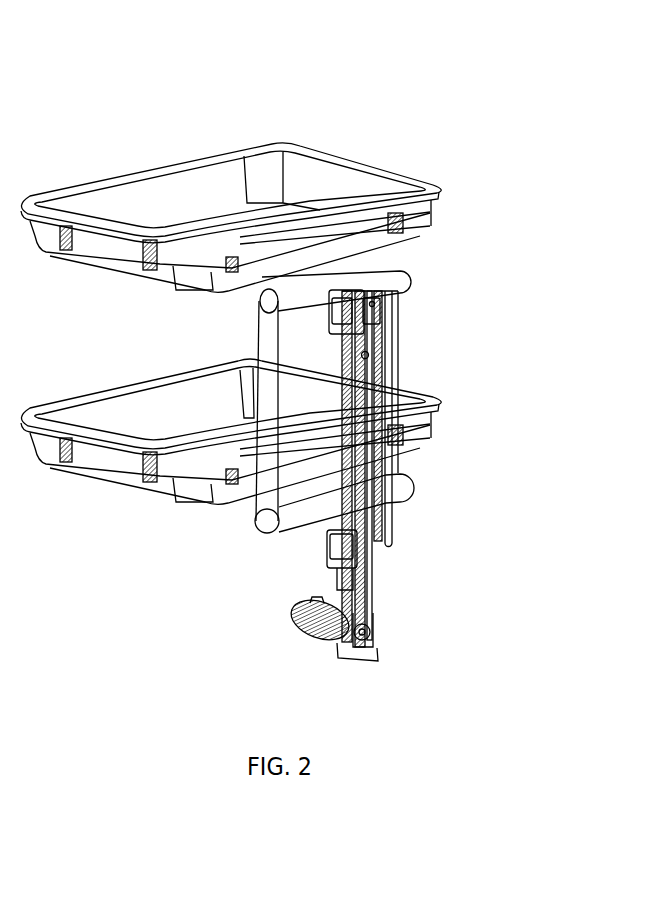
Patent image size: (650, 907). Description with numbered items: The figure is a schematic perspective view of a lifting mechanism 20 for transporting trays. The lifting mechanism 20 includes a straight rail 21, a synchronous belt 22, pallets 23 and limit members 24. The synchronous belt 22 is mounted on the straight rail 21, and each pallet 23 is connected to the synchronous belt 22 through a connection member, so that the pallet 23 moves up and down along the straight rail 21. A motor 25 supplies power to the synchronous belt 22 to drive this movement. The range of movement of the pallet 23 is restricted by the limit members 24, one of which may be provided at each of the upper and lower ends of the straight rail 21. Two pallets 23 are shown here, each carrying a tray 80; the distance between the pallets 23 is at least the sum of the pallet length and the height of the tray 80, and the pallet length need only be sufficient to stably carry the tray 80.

The lifting mechanism 20 is at (273, 346).
The tray 80 is at (333, 181).
The pallet 23 is at (392, 277).
The limit member 24 is at (330, 334).
The straight rail 21 is at (377, 537).
The synchronous belt 22 is at (352, 592).
The motor 25 is at (313, 632).